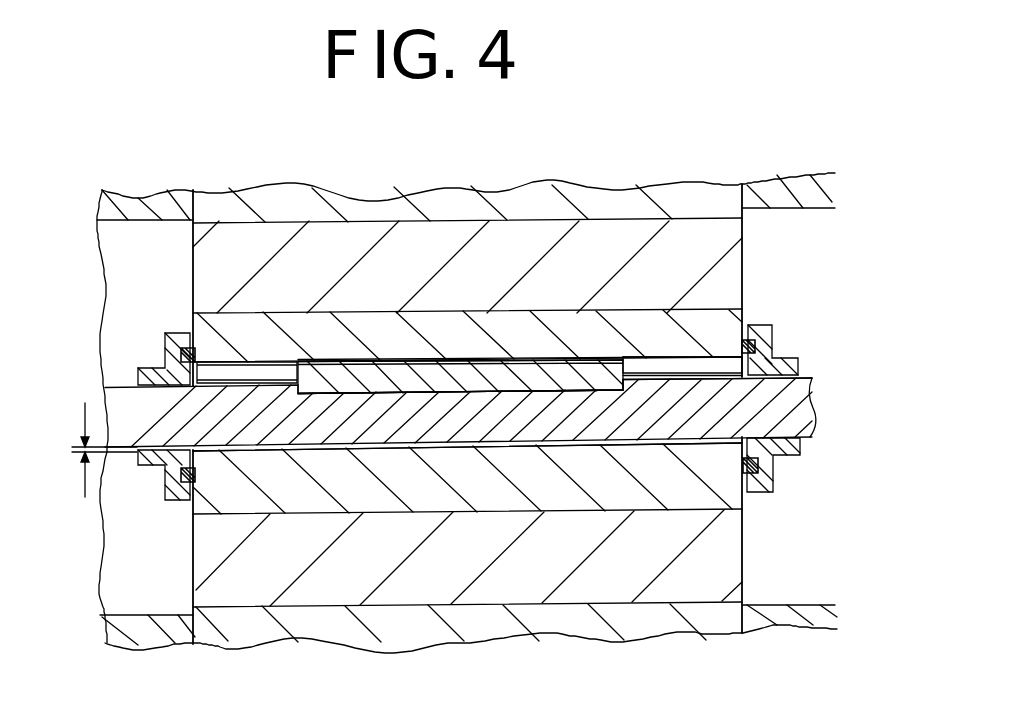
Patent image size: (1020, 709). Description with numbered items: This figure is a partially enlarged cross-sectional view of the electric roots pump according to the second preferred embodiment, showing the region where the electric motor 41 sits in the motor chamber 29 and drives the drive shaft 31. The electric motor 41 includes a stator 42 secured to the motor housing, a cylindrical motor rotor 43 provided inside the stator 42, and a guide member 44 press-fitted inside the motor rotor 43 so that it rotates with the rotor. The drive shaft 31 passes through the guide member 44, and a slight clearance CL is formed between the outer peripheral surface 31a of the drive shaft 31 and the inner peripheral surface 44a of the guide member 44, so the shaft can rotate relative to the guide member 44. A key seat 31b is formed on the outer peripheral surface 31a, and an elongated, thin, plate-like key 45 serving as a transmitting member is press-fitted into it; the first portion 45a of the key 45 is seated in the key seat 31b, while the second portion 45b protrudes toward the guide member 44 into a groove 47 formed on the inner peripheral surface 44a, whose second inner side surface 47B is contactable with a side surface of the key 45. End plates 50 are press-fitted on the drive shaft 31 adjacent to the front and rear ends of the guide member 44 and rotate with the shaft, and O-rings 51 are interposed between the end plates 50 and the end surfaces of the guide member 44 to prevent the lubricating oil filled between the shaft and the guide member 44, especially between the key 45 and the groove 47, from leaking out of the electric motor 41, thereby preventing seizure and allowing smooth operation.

The motor chamber 29 is at (145, 591).
The drive shaft 31 is at (106, 393).
The outer peripheral surface 31a is at (660, 375).
The key seat 31b is at (640, 388).
The electric motor 41 is at (712, 175).
The stator 42 is at (622, 196).
The motor rotor 43 is at (742, 253).
The guide member 44 is at (745, 315).
The inner peripheral surface 44a is at (270, 378).
The key 45 is at (537, 361).
The first portion 45a is at (464, 393).
The second portion 45b is at (474, 362).
The groove 47 is at (418, 361).
The second inner side surface 47B is at (695, 361).
The end plates 50 is at (165, 488).
The O-rings 51 is at (184, 500).
The clearance CL is at (77, 452).